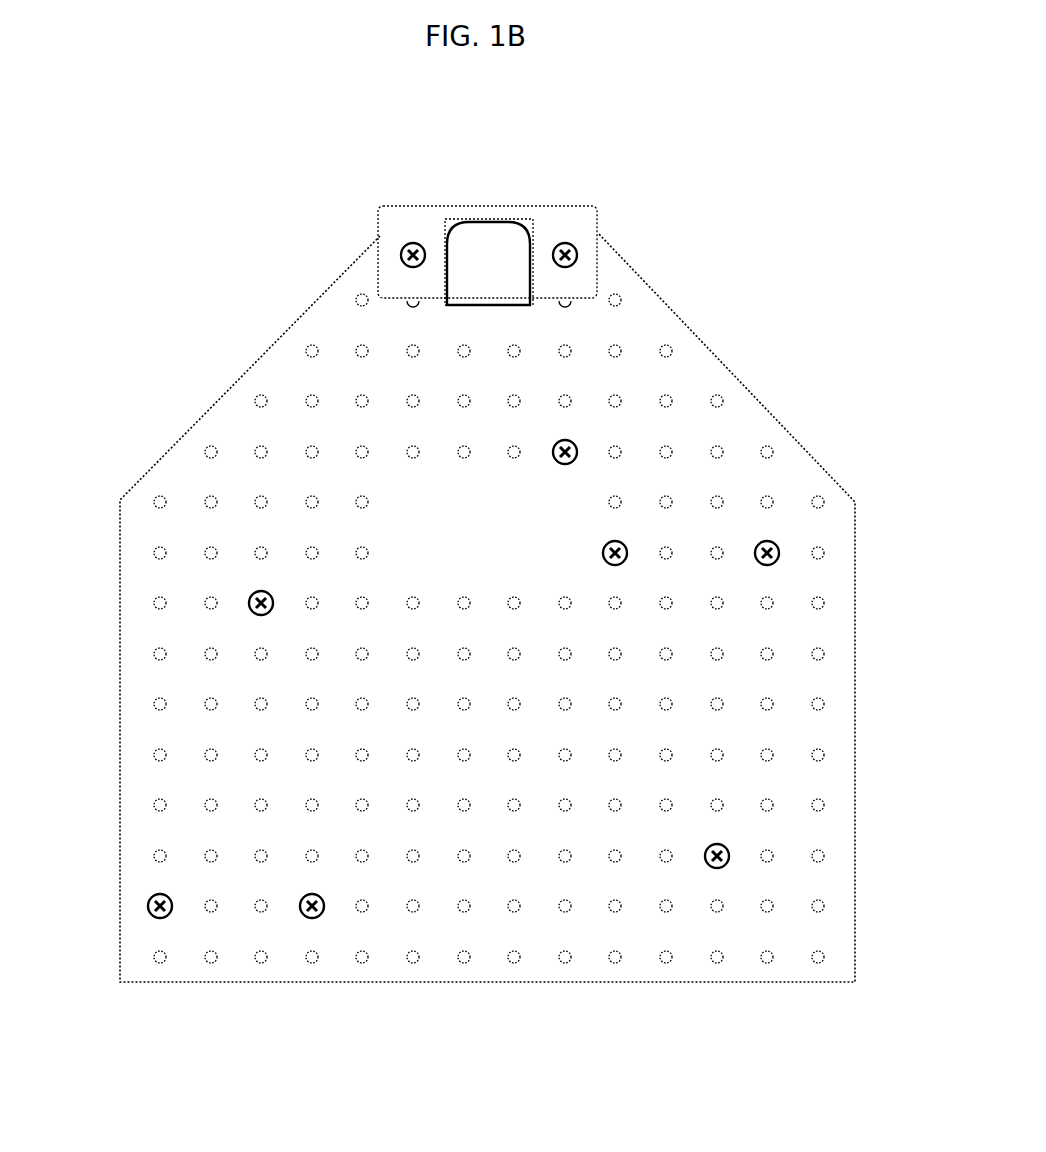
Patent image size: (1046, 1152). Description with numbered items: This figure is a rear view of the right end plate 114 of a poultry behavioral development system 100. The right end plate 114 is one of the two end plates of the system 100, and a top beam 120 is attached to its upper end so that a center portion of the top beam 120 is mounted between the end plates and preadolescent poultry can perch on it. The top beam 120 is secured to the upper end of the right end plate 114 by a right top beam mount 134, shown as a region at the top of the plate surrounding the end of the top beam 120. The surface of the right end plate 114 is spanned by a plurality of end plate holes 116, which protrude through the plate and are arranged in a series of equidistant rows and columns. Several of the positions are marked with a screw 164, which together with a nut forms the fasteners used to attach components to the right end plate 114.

The poultry behavioral development system 100 is at (157, 178).
The right end plate 114 is at (855, 682).
The end plate holes 116 is at (775, 448).
The top beam 120 is at (482, 221).
The right top beam mount 134 is at (592, 205).
The screw 164 is at (397, 252).